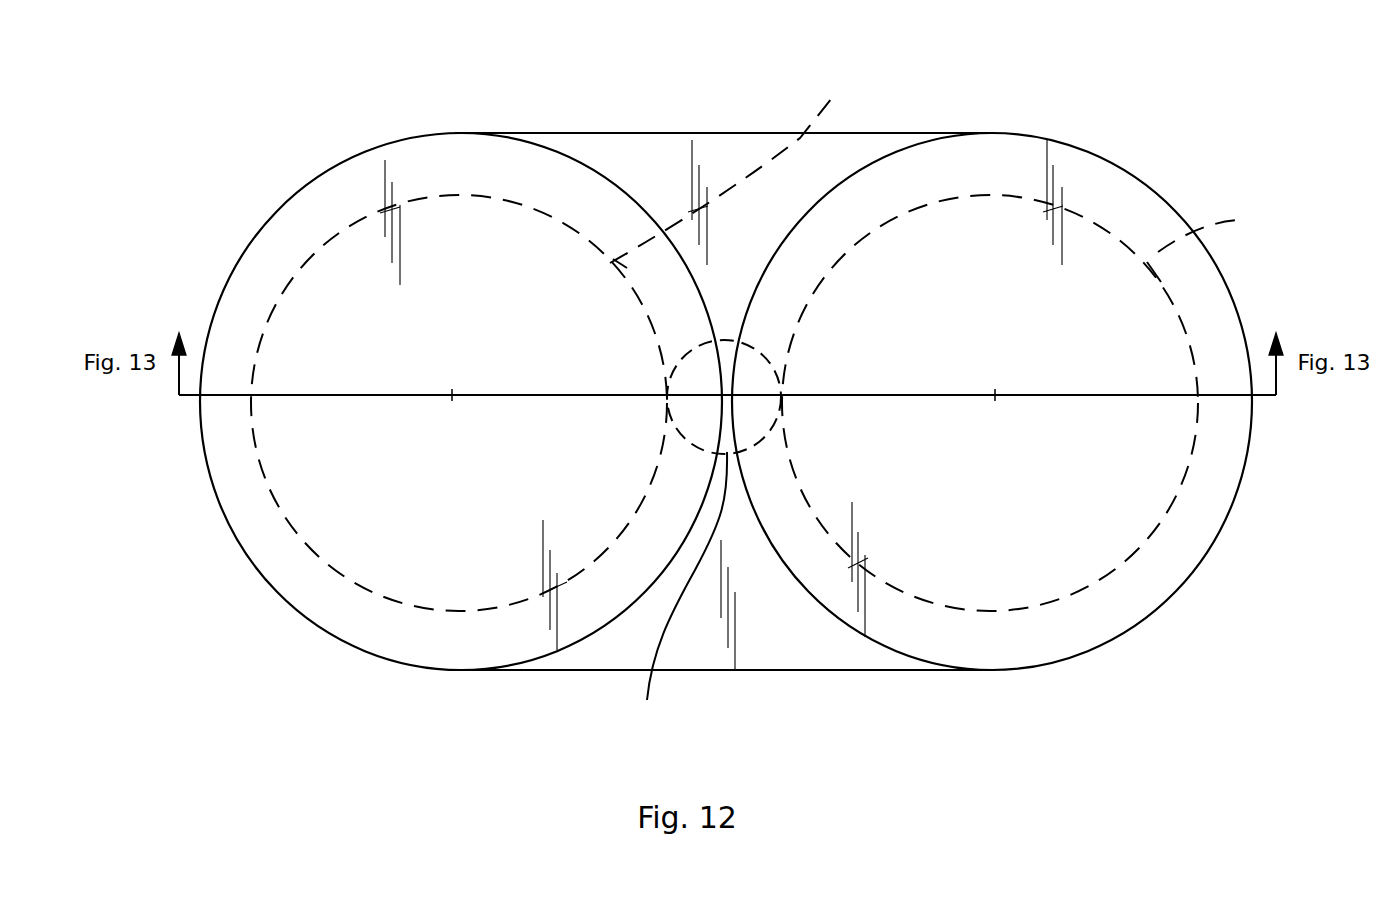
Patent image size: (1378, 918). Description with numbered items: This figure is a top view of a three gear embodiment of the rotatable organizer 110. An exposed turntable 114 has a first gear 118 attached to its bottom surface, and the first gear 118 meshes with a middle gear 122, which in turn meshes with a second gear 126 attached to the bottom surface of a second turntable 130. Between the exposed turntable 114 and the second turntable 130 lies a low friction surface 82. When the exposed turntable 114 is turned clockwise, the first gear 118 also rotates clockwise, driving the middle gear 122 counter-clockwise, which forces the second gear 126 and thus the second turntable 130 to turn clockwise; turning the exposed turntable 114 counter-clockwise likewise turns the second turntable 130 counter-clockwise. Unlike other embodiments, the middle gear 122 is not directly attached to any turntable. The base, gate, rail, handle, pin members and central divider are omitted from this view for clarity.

The rotatable organizer 110 is at (360, 87).
The exposed turntable 114 is at (434, 157).
The second turntable 130 is at (1102, 182).
The first gear 118 is at (732, 166).
The second gear 126 is at (1257, 215).
The middle gear 122 is at (676, 593).
The low friction surface 82 is at (675, 150).